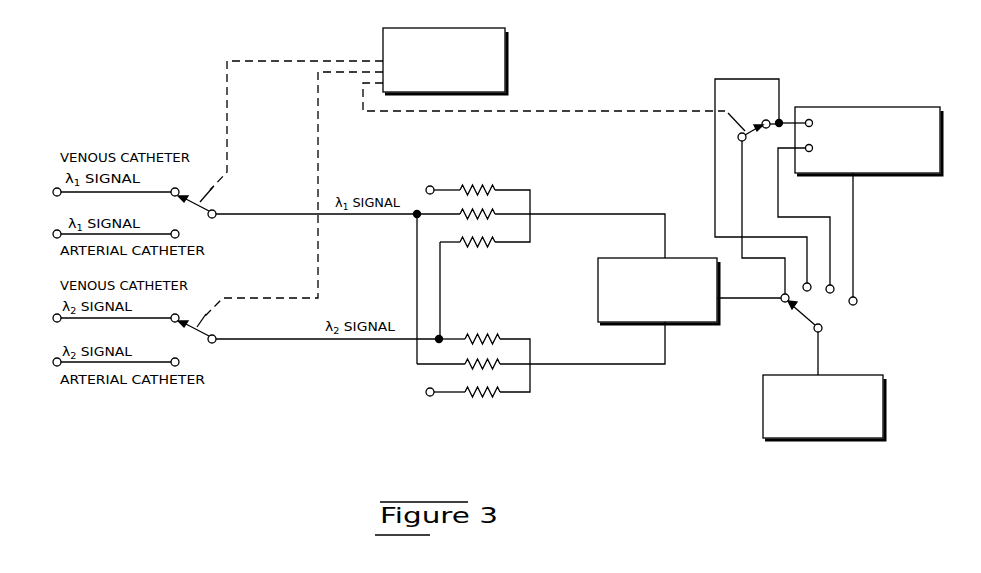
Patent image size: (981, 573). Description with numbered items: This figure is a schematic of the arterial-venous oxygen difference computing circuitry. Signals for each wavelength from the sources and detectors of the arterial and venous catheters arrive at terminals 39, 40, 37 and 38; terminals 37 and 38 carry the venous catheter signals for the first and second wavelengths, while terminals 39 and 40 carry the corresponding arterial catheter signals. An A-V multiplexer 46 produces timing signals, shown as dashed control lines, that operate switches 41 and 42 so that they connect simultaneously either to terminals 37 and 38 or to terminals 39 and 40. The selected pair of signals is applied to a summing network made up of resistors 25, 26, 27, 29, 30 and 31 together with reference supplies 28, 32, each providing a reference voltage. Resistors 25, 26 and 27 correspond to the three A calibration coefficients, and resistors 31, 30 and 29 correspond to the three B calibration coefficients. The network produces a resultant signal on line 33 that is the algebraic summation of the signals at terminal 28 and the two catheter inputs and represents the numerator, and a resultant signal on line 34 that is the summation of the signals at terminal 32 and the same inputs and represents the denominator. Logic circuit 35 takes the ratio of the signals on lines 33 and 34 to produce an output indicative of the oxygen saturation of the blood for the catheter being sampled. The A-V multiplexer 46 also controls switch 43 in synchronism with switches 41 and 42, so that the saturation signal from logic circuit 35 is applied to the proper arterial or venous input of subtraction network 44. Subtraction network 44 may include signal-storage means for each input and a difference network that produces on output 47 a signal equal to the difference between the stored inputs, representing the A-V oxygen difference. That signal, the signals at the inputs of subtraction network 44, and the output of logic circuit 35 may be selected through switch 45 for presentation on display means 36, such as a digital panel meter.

The resistor 25 is at (500, 187).
The resistor 26 is at (460, 203).
The resistor 27 is at (462, 239).
The reference supply terminal 28 is at (439, 187).
The resistor 29 is at (466, 320).
The resistor 30 is at (464, 361).
The resistor 31 is at (465, 387).
The reference supply terminal 32 is at (426, 390).
The numerator line 33 is at (572, 214).
The denominator line 34 is at (548, 364).
The ratio taking logic circuit 35 is at (620, 258).
The display means 36 is at (870, 375).
The venous catheter first-wavelength terminal 37 is at (50, 191).
The venous catheter second-wavelength terminal 38 is at (52, 318).
The arterial catheter first-wavelength terminal 39 is at (52, 234).
The arterial catheter second-wavelength terminal 40 is at (52, 362).
The switch 41 is at (202, 183).
The switch 42 is at (207, 322).
The switch 43 is at (741, 102).
The subtraction network 44 is at (930, 107).
The switch 45 is at (822, 321).
The A-V multiplexer 46 is at (507, 69).
The output 47 is at (853, 206).